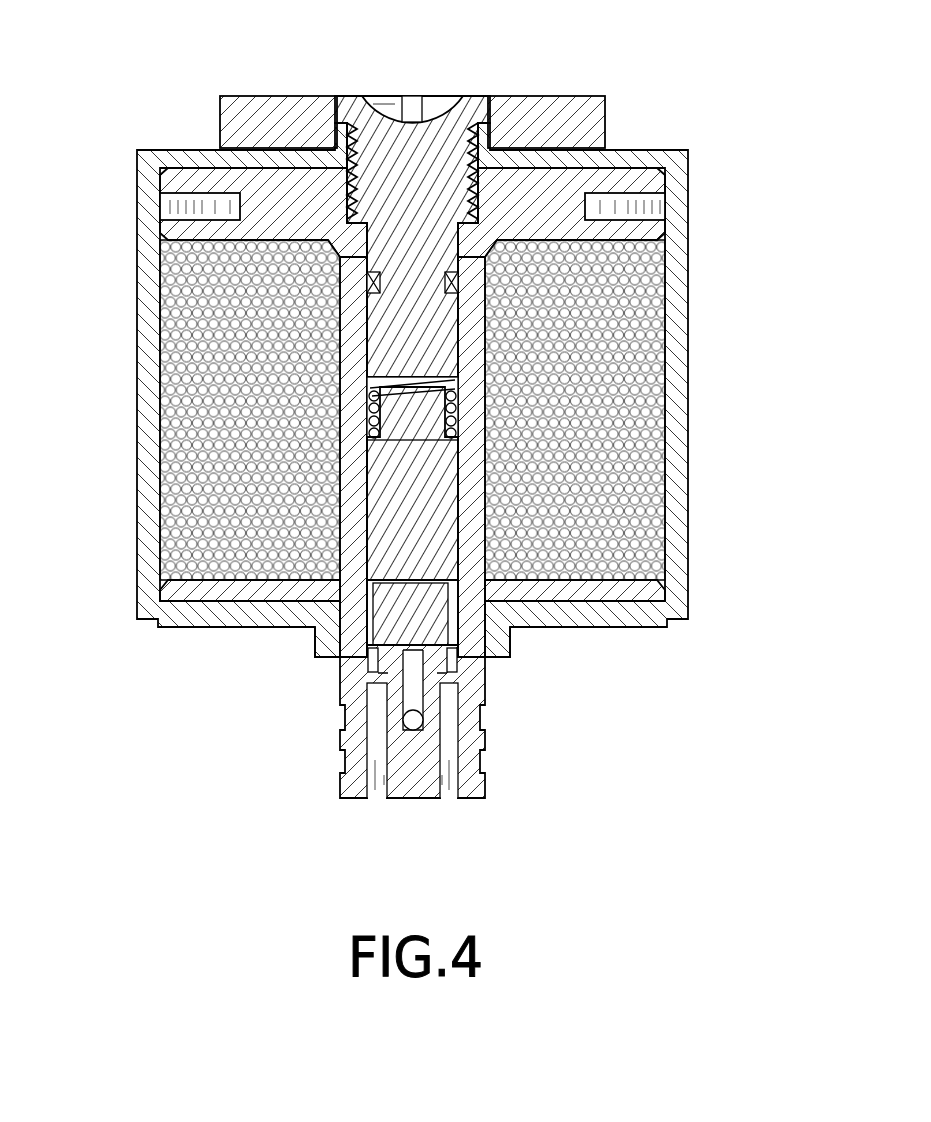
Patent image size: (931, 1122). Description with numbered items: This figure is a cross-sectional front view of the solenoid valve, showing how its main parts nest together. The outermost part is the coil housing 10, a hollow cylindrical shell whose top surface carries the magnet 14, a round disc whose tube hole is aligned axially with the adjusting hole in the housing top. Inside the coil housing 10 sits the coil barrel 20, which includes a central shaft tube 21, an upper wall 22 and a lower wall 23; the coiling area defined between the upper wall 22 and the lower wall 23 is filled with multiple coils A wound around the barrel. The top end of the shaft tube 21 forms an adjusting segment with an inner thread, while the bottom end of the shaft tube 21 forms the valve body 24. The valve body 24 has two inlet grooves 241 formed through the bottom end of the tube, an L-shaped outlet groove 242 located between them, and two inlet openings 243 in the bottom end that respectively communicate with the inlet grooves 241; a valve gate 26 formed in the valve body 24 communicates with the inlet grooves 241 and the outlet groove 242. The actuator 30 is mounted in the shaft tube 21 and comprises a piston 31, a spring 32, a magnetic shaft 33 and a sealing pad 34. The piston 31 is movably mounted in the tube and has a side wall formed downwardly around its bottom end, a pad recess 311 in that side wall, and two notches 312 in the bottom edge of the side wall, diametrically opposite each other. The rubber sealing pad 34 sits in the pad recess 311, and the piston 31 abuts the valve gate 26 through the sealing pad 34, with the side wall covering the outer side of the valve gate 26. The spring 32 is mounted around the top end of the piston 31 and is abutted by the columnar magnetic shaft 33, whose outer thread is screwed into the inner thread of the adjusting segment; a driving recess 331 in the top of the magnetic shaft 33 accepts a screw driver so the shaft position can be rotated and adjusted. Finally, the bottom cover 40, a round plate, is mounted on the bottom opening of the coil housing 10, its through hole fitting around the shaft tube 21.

The coil housing 10 is at (443, 435).
The magnet 14 is at (222, 102).
The coil barrel 20 is at (662, 211).
The shaft tube 21 is at (357, 353).
The upper wall 22 is at (177, 181).
The lower wall 23 is at (232, 590).
The valve body 24 is at (419, 752).
The valve gate 26 is at (432, 675).
The actuator 30 is at (385, 194).
The piston 31 is at (373, 492).
The spring 32 is at (368, 405).
The magnetic shaft 33 is at (363, 222).
The sealing pad 34 is at (432, 605).
The bottom cover 40 is at (637, 628).
The inlet grooves 241 is at (375, 750).
The outlet groove 242 is at (402, 706).
The inlet openings 243 is at (375, 800).
The pad recess 311 is at (385, 672).
The notches 312 is at (373, 660).
The driving recess 331 is at (412, 105).
The coils A is at (648, 506).